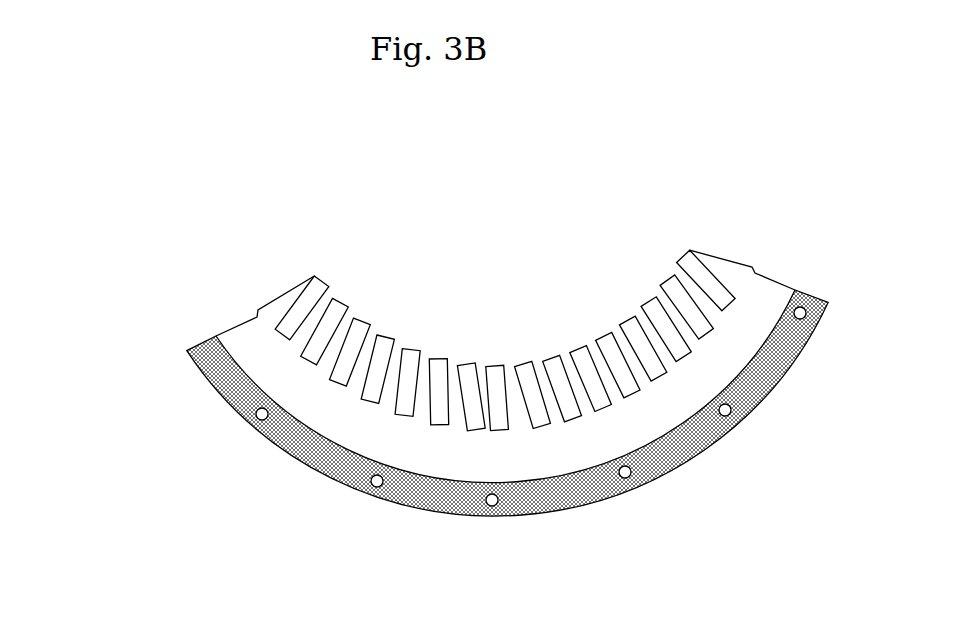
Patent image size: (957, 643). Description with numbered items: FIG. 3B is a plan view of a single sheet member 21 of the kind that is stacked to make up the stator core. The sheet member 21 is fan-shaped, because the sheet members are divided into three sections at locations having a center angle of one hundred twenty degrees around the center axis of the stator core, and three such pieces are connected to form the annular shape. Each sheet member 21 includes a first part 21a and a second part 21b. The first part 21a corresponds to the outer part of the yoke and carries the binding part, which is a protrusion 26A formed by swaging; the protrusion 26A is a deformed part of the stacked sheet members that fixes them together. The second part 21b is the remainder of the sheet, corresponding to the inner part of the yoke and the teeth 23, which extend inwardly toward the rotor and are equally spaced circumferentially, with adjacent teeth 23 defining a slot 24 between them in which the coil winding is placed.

The sheet member 21 is at (93, 315).
The first part 21a is at (222, 378).
The second part 21b is at (235, 326).
The teeth 23 is at (688, 253).
The slot 24 is at (327, 295).
The protrusion 26A is at (259, 420).